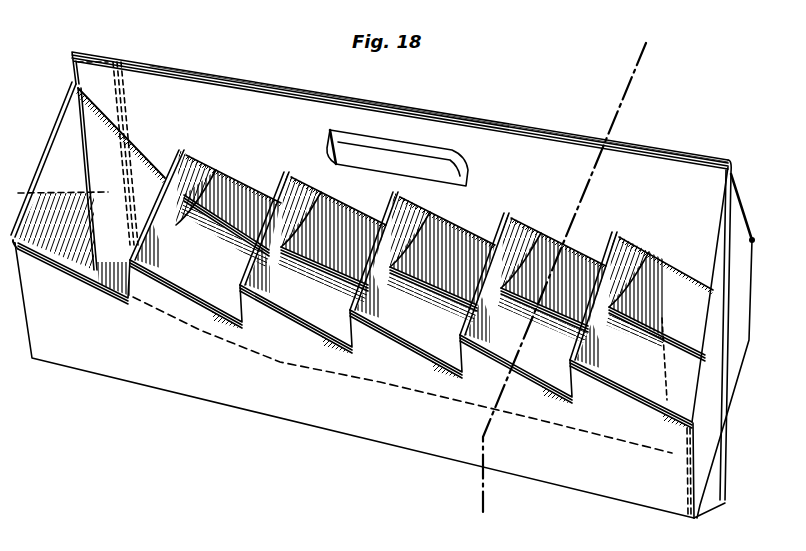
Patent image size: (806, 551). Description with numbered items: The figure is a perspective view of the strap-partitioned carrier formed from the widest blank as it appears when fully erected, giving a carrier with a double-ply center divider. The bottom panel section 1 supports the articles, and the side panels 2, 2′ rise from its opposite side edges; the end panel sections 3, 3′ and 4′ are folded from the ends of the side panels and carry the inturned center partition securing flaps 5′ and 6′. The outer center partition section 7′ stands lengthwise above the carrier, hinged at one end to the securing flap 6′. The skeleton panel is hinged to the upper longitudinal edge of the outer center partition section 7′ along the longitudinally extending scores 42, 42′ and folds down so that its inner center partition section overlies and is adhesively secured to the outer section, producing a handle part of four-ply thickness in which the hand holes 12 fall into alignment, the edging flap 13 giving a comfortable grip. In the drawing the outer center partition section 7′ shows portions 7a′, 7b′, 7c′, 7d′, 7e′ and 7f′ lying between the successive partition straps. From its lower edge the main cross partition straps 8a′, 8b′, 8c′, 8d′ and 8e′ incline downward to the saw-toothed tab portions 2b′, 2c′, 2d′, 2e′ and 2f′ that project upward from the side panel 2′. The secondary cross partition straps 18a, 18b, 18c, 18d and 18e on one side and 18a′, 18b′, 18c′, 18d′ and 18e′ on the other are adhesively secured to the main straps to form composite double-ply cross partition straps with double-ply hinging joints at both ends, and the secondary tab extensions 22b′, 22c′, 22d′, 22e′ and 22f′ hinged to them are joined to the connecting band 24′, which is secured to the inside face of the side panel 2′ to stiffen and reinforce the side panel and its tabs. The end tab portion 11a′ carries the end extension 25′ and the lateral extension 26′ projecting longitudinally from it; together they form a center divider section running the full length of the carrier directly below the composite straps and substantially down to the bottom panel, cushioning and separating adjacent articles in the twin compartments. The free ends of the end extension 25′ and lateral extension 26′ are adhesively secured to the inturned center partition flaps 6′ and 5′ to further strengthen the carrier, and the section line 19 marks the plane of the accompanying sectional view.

The bottom panel section 1 is at (330, 257).
The side panel 2 is at (752, 240).
The side panel 2′ is at (270, 406).
The tab portion 2b′ is at (153, 296).
The tab portion 2c′ is at (255, 314).
The tab portion 2d′ is at (373, 341).
The tab portion 2e′ is at (483, 346).
The tab portion 2f′ is at (586, 396).
The end panel section 3 is at (741, 260).
The end panel section 3′ is at (720, 388).
The end panel section 4′ is at (55, 177).
The center partition securing flap 5′ is at (679, 298).
The center partition securing flap 6′ is at (55, 191).
The outer center partition section 7′ is at (525, 152).
The top panel section 7a′ is at (160, 168).
The top panel section 7b′ is at (204, 205).
The top panel section 7c′ is at (312, 228).
The top panel section 7d′ is at (422, 251).
The top panel section 7e′ is at (532, 274).
The top panel section 7f′ is at (638, 296).
The main cross partition strap 8a′ is at (146, 223).
The main cross partition strap 8b′ is at (258, 255).
The main cross partition strap 8c′ is at (360, 291).
The main cross partition strap 8d′ is at (470, 278).
The main cross partition strap 8e′ is at (576, 317).
The end tab portion 11a′ is at (145, 177).
The hand hole 12 is at (437, 152).
The edging flap 13 is at (383, 140).
The secondary cross partition strap 18a is at (200, 178).
The secondary cross partition strap 18b is at (312, 186).
The secondary cross partition strap 18c is at (412, 222).
The secondary cross partition strap 18d is at (520, 248).
The secondary cross partition strap 18e is at (638, 262).
The secondary cross partition strap 18a′ is at (157, 231).
The secondary cross partition strap 18b′ is at (271, 254).
The secondary cross partition strap 18c′ is at (386, 290).
The secondary cross partition strap 18d′ is at (526, 292).
The secondary cross partition strap 18e′ is at (586, 346).
The section line 19 is at (649, 60).
The secondary tab extension 22b′ is at (190, 294).
The secondary tab extension 22c′ is at (300, 298).
The secondary tab extension 22d′ is at (416, 333).
The secondary tab extension 22e′ is at (514, 358).
The secondary tab extension 22f′ is at (648, 400).
The connecting band 24′ is at (343, 377).
The end extension 25′ is at (110, 270).
The lateral extension 26′ is at (680, 368).
The longitudinally extending score 42 is at (264, 84).
The longitudinally extending score 42′ is at (209, 75).